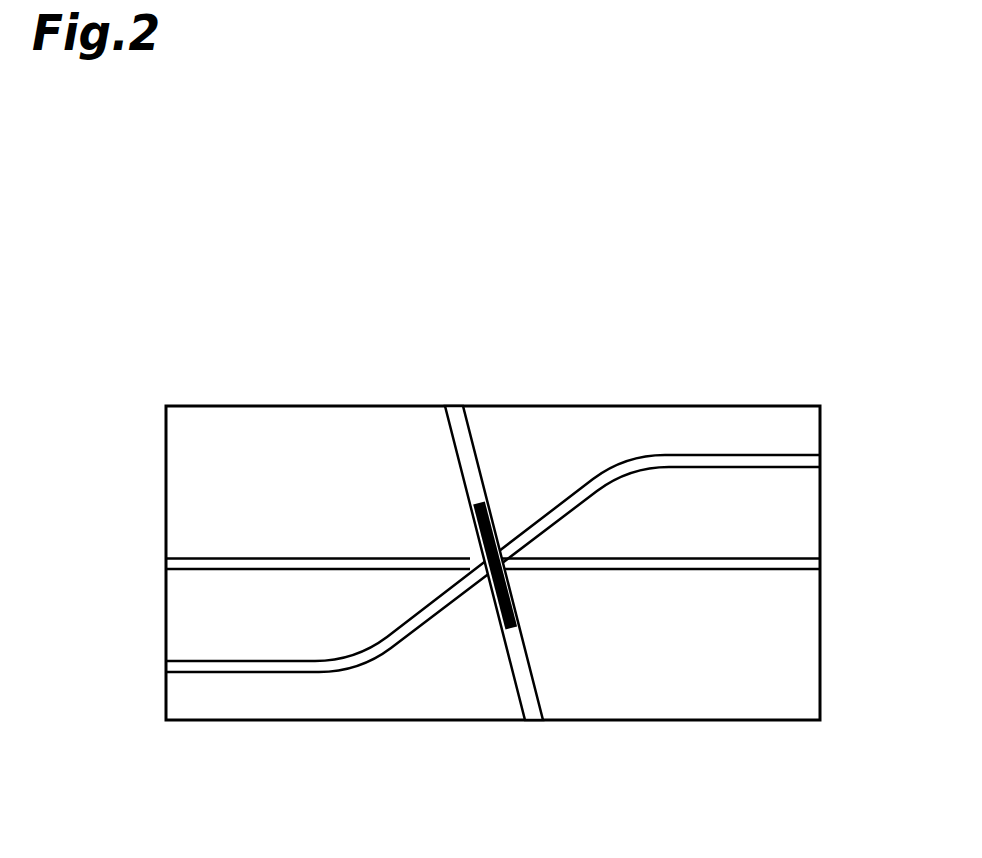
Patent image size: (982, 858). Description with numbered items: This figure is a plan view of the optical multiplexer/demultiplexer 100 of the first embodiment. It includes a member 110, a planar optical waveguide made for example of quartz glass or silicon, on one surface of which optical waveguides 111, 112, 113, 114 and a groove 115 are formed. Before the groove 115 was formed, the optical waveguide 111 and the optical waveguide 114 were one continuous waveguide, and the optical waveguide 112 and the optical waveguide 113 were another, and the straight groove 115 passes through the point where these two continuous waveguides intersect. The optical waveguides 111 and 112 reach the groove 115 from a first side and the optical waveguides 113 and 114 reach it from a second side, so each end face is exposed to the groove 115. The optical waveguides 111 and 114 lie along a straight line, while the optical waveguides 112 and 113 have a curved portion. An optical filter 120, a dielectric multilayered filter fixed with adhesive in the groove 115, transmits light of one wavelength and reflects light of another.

The optical multiplexer/demultiplexer 100 is at (647, 372).
The member 110 is at (310, 715).
The optical waveguide 111 is at (200, 557).
The optical waveguide 112 is at (187, 660).
The optical waveguide 113 is at (795, 470).
The optical waveguide 114 is at (795, 572).
The groove 115 is at (536, 712).
The optical filter 120 is at (493, 617).